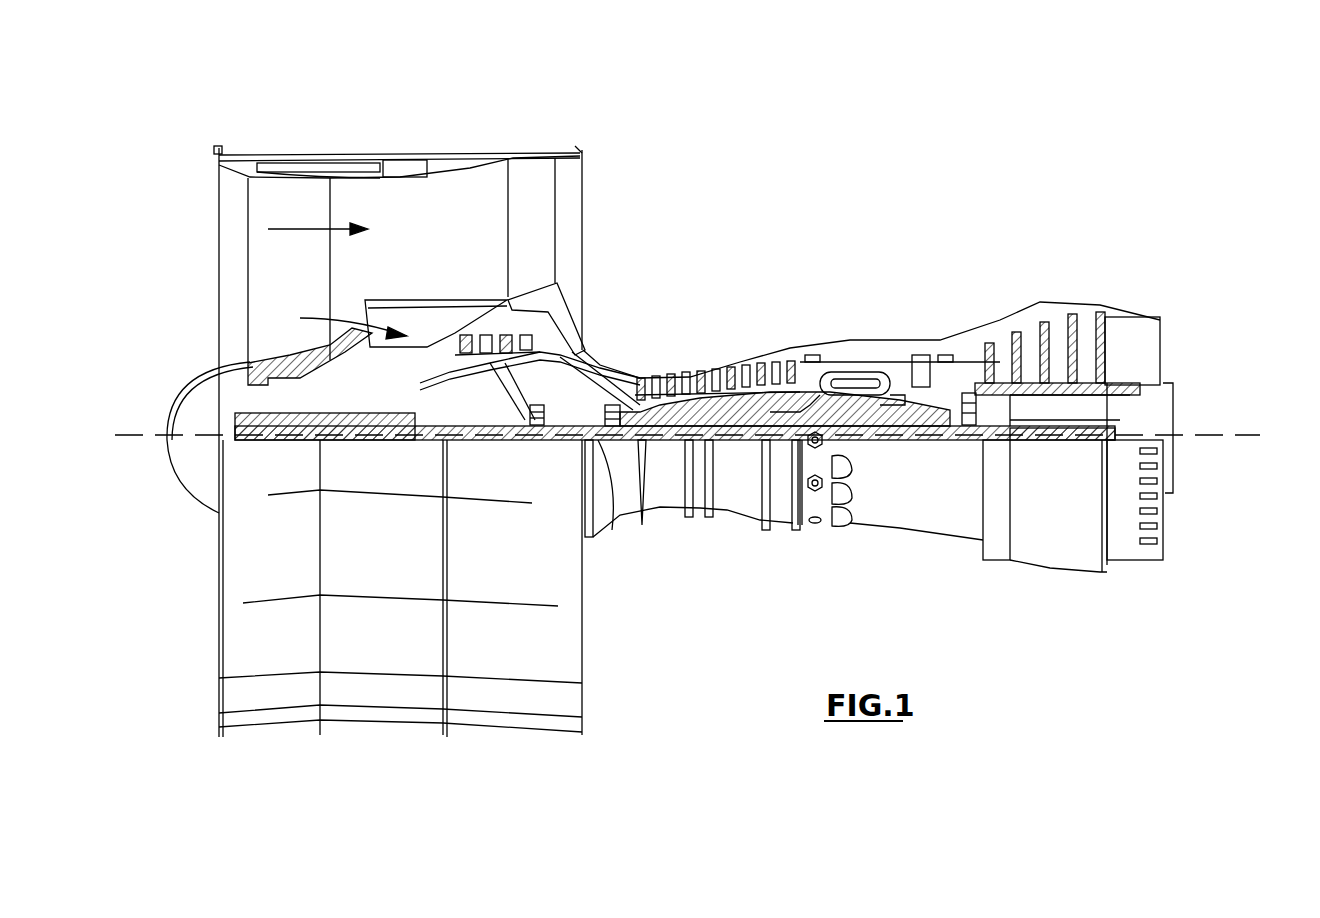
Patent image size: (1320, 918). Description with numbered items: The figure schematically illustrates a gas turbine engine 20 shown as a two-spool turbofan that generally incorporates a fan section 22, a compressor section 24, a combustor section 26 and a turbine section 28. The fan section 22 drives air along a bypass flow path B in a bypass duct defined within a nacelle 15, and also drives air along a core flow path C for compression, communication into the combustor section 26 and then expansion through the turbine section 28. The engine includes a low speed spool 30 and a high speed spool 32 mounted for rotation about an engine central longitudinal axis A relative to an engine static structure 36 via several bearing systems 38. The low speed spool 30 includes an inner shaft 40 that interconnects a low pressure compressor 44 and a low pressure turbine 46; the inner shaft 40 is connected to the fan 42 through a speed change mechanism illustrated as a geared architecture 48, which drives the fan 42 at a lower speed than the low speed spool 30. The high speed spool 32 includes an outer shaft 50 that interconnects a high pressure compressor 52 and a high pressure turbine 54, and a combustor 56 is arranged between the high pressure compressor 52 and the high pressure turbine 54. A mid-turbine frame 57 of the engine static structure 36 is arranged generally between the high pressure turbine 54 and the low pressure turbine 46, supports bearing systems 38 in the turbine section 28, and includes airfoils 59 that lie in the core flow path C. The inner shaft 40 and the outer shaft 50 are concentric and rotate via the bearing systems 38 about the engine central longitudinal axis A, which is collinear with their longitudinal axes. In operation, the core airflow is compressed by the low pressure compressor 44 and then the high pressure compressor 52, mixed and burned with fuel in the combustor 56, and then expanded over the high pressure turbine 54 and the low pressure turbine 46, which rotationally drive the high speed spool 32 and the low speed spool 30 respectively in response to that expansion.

The gas turbine engine 20 is at (871, 254).
The fan section 22 is at (332, 145).
The nacelle 15 is at (400, 155).
The fan 42 is at (289, 270).
The bypass flow path B is at (305, 229).
The core flow path C is at (392, 323).
The low pressure compressor 44 is at (510, 345).
The geared architecture 48 is at (405, 420).
The bearing systems 38 is at (540, 425).
The compressor section 24 is at (632, 345).
The high pressure compressor 52 is at (708, 385).
The high speed spool 32 is at (778, 400).
The combustor section 26 is at (855, 330).
The combustor 56 is at (860, 380).
The high pressure turbine 54 is at (918, 352).
The mid-turbine frame 57 is at (972, 350).
The turbine section 28 is at (1003, 297).
The low pressure turbine 46 is at (1050, 315).
The airfoils 59 is at (968, 370).
The outer shaft 50 is at (868, 412).
The low speed spool 30 is at (742, 450).
The engine static structure 36 is at (782, 525).
The inner shaft 40 is at (612, 530).
The engine central longitudinal axis A is at (1248, 435).